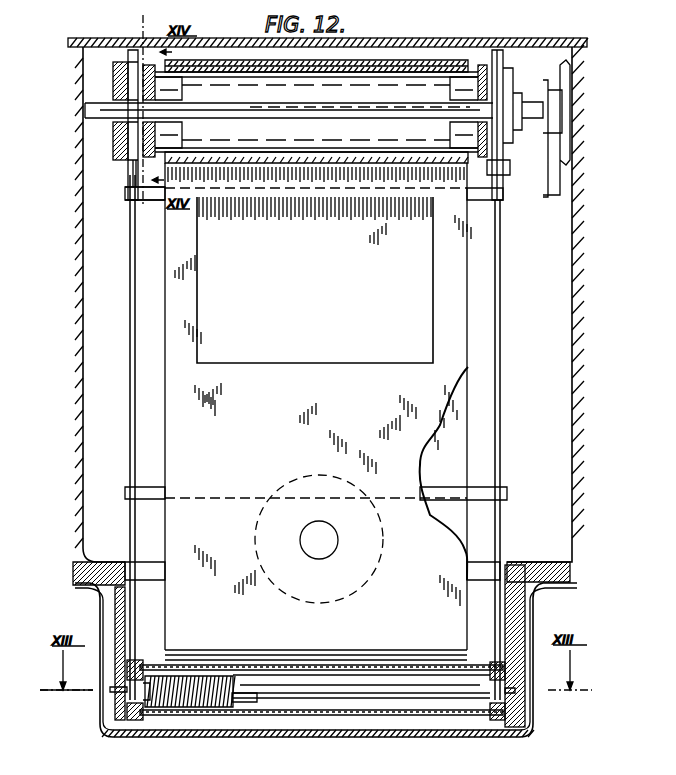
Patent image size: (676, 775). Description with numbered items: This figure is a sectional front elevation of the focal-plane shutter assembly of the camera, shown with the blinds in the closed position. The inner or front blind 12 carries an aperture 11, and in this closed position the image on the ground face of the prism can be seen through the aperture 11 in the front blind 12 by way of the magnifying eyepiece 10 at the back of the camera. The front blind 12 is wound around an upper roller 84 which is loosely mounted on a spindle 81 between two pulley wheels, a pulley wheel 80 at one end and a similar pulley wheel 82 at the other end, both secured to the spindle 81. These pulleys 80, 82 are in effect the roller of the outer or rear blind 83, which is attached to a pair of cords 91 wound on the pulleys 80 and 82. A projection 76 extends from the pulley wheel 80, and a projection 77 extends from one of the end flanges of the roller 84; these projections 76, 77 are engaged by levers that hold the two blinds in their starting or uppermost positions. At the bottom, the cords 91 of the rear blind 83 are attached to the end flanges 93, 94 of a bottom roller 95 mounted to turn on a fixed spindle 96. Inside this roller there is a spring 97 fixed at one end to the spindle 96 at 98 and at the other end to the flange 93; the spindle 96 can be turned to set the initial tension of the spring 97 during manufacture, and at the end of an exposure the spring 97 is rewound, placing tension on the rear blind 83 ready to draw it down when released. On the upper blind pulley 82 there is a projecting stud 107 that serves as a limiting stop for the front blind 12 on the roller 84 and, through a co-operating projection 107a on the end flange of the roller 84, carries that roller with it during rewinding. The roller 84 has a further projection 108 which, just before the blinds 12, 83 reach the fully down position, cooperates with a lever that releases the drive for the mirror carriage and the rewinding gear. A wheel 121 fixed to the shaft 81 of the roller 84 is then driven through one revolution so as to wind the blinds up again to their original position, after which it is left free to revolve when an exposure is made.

The magnifying eyepiece 10 is at (372, 576).
The aperture 11 is at (330, 546).
The inner or front blind 12 is at (467, 322).
The projection 76 is at (503, 170).
The projection 77 is at (497, 190).
The pulley wheel 80 is at (503, 62).
The spindle 81 is at (306, 104).
The pulley wheel 82 is at (113, 68).
The outer or rear blind 83 is at (306, 190).
The upper roller 84 is at (410, 64).
The cords 91 is at (130, 312).
The end flange 93 is at (135, 720).
The end flange 94 is at (497, 720).
The bottom roller 95 is at (357, 715).
The fixed spindle 96 is at (420, 688).
The spring 97 is at (182, 707).
The fixing point of spring 97 on spindle 96 98 is at (253, 702).
The projecting stud 107 is at (130, 97).
The co-operating projection 107a is at (133, 85).
The projection 108 is at (132, 170).
The wheel 121 is at (115, 143).